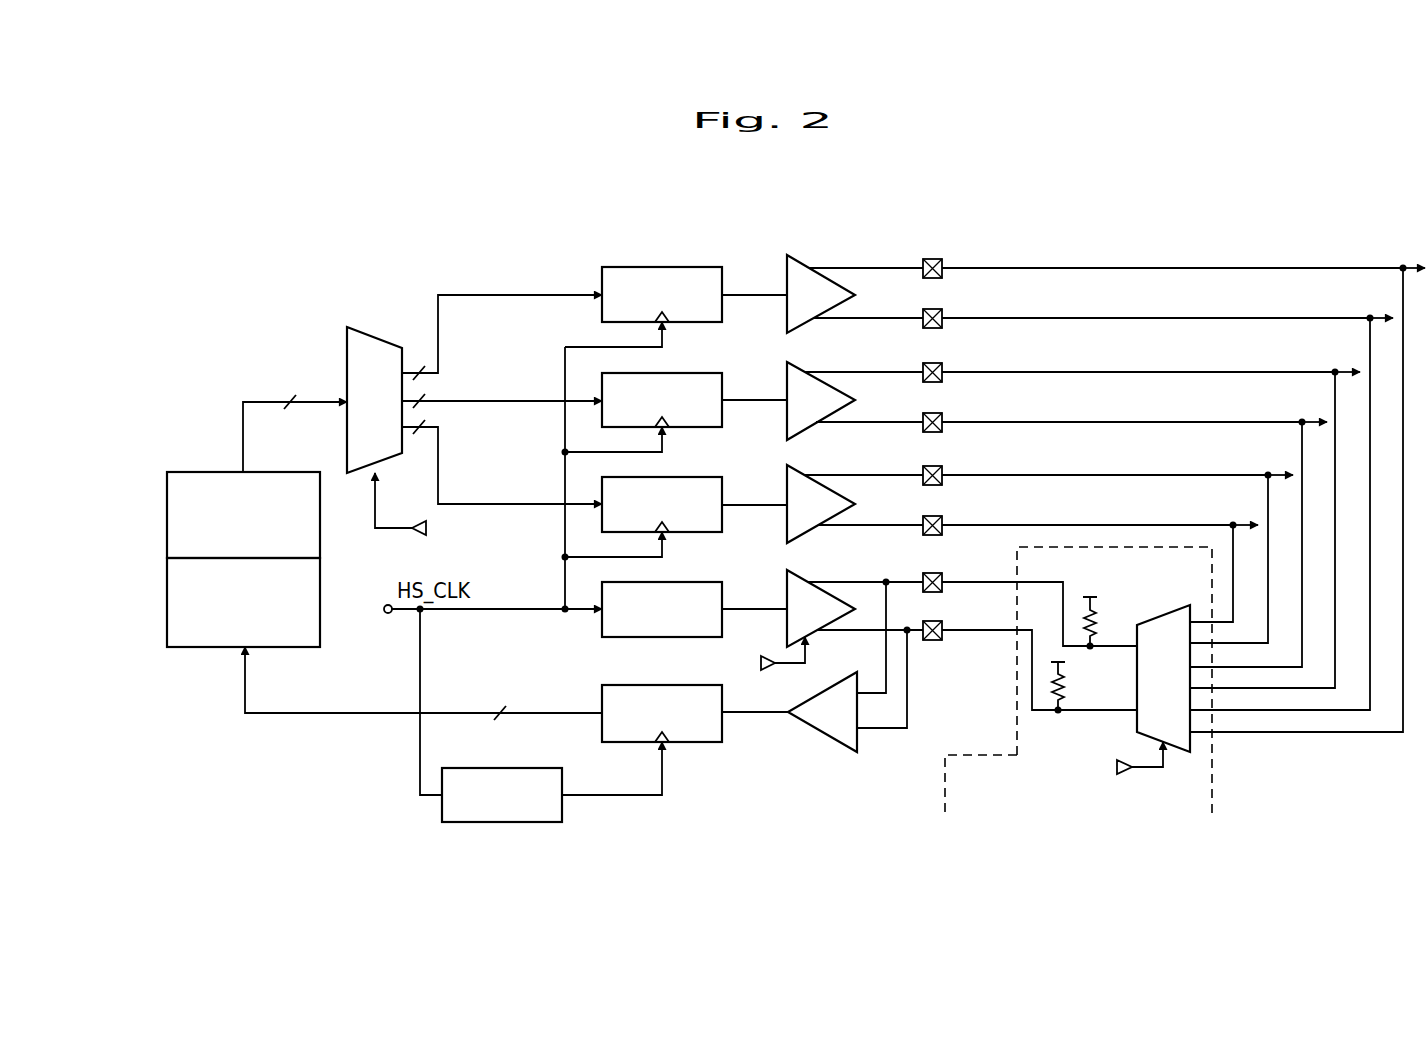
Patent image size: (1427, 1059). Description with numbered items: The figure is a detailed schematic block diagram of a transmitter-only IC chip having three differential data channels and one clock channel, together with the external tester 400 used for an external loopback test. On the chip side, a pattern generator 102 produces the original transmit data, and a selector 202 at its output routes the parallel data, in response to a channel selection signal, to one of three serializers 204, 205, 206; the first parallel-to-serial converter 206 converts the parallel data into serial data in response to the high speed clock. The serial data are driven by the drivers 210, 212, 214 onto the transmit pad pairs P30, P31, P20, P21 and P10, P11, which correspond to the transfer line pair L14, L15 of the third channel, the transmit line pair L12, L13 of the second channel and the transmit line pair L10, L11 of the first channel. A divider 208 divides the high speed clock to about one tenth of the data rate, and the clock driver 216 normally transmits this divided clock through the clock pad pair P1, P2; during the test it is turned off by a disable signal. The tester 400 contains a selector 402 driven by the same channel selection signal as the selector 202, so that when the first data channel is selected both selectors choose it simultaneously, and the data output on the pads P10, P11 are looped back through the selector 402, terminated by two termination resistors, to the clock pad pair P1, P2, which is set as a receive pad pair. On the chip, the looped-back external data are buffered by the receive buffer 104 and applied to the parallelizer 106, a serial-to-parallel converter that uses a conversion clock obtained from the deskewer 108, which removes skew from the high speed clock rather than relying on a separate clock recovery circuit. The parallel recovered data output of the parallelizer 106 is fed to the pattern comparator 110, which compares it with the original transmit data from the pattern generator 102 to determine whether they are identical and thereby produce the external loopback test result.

The pattern generator 102 is at (167, 512).
The pattern comparator 110 is at (167, 598).
The selector 202 is at (376, 336).
The serializer 204 is at (673, 267).
The serializer 205 is at (673, 373).
The first parallel-to-serial converter 206 is at (673, 477).
The divider 208 is at (677, 582).
The driver 210 is at (797, 254).
The driver 212 is at (797, 362).
The data driver 214 is at (797, 466).
The clock driver 216 is at (797, 570).
The receive buffer 104 is at (826, 740).
The parallelizer 106 is at (683, 685).
The deskewer 108 is at (515, 768).
The tester 400 is at (1122, 683).
The selector 402 is at (1163, 614).
The transmit pad P30 is at (932, 258).
The transmit pad P31 is at (932, 308).
The transmit pad P20 is at (932, 362).
The transmit pad P21 is at (932, 412).
The transmit pad P10 is at (932, 465).
The transmit pad P11 is at (932, 515).
The transmit pad P1 is at (932, 572).
The transmit pad P2 is at (932, 620).
The transfer line L15 is at (1113, 268).
The transfer line L14 is at (1113, 318).
The transmit line L13 is at (1113, 372).
The transmit line L12 is at (1113, 422).
The transmit line L11 is at (1113, 475).
The transmit line L10 is at (1113, 525).